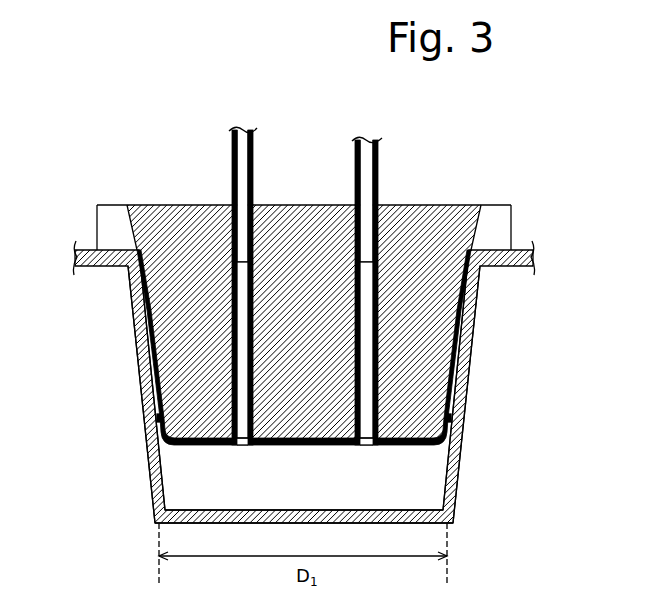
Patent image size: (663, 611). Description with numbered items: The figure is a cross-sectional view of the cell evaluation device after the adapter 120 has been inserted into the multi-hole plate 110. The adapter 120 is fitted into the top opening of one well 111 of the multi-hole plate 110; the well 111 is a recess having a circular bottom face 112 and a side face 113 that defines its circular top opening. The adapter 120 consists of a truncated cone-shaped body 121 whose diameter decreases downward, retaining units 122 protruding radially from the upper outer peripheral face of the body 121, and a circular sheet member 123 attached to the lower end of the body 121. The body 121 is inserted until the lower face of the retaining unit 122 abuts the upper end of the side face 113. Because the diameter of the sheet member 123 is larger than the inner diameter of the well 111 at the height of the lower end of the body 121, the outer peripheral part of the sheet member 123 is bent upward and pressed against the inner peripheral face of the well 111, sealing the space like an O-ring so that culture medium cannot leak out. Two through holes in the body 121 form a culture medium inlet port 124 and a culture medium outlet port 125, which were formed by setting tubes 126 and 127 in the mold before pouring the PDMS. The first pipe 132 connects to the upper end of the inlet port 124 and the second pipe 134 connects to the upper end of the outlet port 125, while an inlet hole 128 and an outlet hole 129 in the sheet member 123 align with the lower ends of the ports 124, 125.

The multi-hole plate 110 is at (529, 284).
The well 111 is at (126, 476).
The bottom face 112 is at (242, 524).
The side face 113 is at (138, 380).
The adapter 120 is at (511, 178).
The body 121 is at (170, 350).
The retaining unit 122 is at (94, 218).
The sheet member 123 is at (156, 421).
The culture medium inlet port 124 is at (238, 285).
The culture medium outlet port 125 is at (363, 290).
The tube 126 is at (229, 207).
The tube 127 is at (355, 207).
The inlet hole 128 is at (241, 446).
The outlet hole 129 is at (368, 447).
The first pipe 132 is at (253, 150).
The second pipe 134 is at (378, 152).